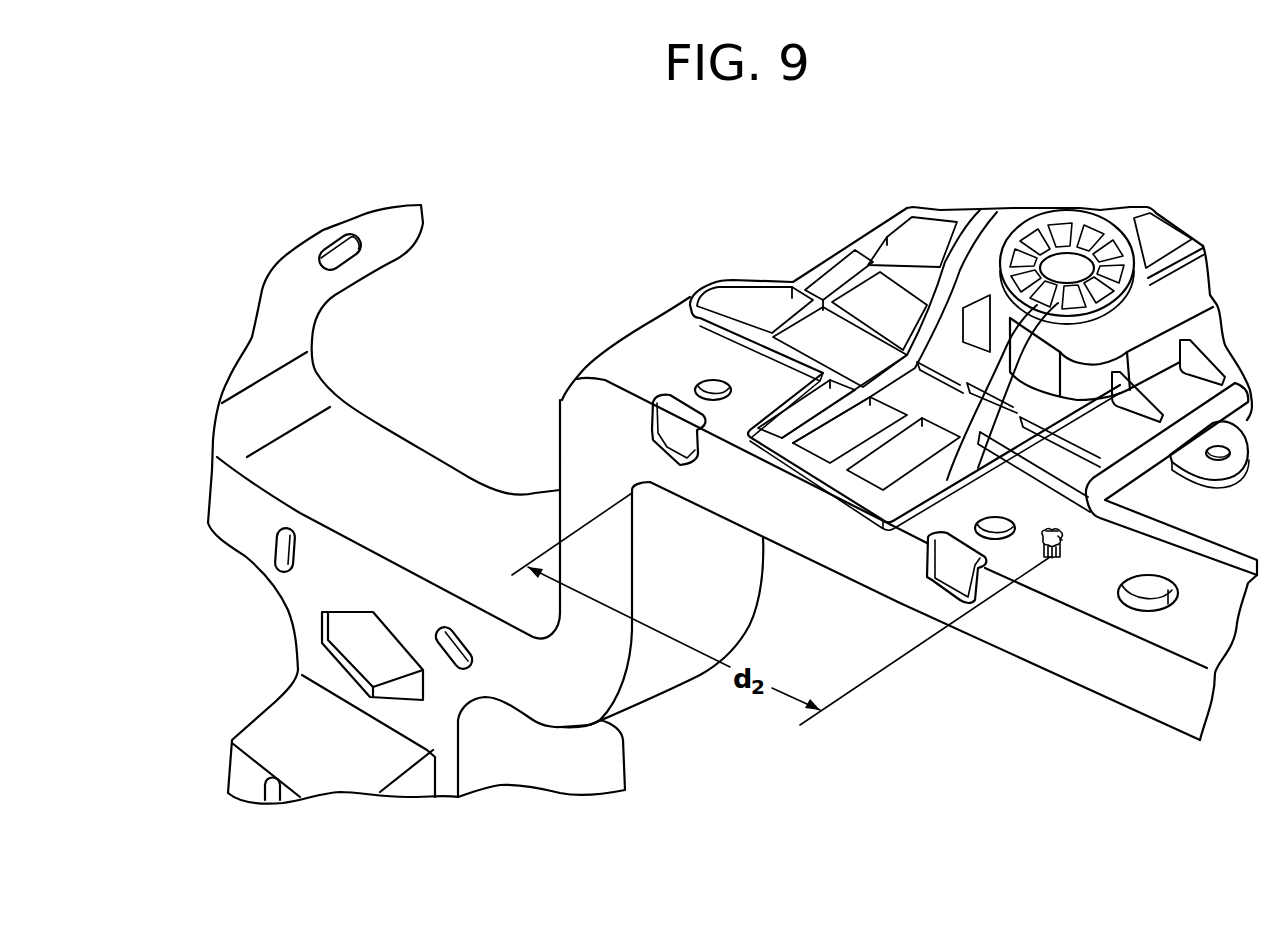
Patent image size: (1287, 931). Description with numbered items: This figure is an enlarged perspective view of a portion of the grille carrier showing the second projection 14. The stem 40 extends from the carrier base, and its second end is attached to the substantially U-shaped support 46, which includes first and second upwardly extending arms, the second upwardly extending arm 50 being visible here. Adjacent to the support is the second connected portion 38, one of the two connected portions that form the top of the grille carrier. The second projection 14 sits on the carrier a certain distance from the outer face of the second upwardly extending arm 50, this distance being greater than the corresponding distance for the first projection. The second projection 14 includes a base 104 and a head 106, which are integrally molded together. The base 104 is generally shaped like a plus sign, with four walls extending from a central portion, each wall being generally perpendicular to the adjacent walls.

The second projection 14 is at (1062, 538).
The second connected portion 38 is at (952, 633).
The stem 40 is at (520, 766).
The U-shaped support 46 is at (398, 523).
The second upwardly extending arm 50 is at (680, 604).
The base 104 is at (1050, 560).
The head 106 is at (1057, 532).